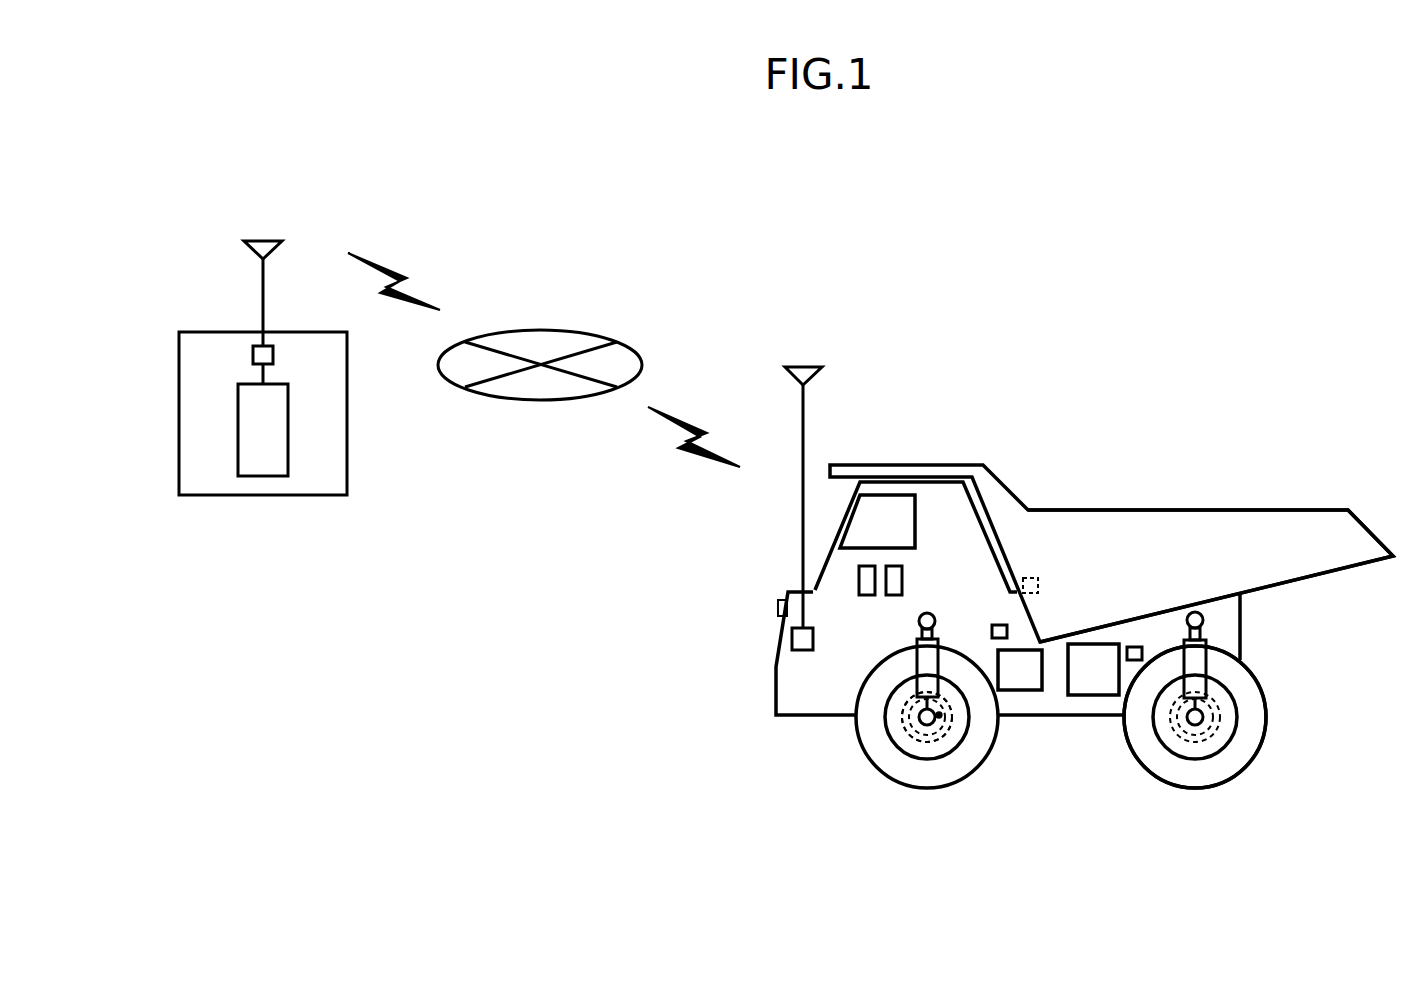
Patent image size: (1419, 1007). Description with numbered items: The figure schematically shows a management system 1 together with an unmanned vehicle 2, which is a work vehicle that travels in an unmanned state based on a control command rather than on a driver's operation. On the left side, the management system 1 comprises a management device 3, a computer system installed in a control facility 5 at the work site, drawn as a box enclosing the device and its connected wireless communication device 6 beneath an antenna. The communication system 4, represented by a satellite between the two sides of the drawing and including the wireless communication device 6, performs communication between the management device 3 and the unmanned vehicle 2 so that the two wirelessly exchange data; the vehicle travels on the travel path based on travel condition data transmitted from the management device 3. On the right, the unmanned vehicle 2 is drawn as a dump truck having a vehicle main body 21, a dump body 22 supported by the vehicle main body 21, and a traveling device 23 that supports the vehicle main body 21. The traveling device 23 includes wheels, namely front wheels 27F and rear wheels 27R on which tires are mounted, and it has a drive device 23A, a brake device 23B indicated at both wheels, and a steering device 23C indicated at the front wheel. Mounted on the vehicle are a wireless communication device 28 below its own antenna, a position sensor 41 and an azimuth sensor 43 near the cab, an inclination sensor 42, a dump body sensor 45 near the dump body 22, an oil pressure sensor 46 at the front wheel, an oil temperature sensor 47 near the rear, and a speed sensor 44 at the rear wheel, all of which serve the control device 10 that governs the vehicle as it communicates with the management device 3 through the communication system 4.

The management system 1 is at (826, 239).
The unmanned vehicle 2 is at (1216, 456).
The management device 3 is at (238, 424).
The communication system 4 is at (542, 331).
The control facility 5 is at (201, 327).
The wireless communication device 6 is at (253, 355).
The control device 10 is at (1018, 695).
The vehicle main body 21 is at (1255, 637).
The dump body 22 is at (1104, 510).
The traveling device 23 is at (1272, 689).
The drive device 23A is at (1090, 697).
The brake device 23B is at (912, 742).
The steering device 23C is at (893, 722).
The front wheels 27F is at (930, 758).
The rear wheels 27R is at (1195, 758).
The wireless communication device 28 is at (790, 634).
The position sensor 41 is at (896, 596).
The inclination sensor 42 is at (996, 625).
The azimuth sensor 43 is at (859, 580).
The speed sensor 44 is at (1215, 722).
The dump body sensor 45 is at (1030, 578).
The oil pressure sensor 46 is at (941, 720).
The oil temperature sensor 47 is at (1134, 647).